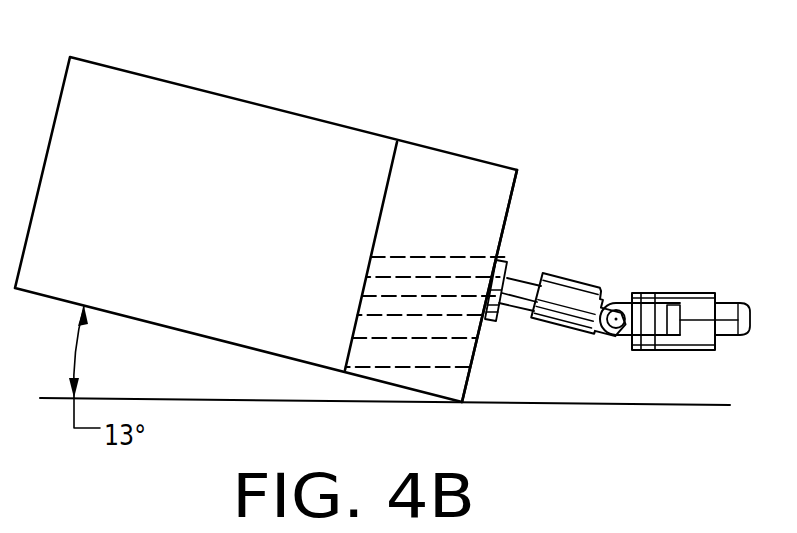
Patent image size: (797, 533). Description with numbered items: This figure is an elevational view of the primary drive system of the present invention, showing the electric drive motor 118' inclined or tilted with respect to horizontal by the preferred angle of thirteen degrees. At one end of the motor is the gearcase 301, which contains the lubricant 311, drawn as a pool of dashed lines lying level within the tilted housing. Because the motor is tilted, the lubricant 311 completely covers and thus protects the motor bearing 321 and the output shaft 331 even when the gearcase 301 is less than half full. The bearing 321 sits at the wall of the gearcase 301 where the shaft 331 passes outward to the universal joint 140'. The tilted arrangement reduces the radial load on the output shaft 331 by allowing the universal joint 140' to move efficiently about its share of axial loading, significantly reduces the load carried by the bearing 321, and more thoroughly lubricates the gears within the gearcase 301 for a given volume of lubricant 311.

The electric drive motor 118' is at (266, 218).
The gearcase 301 is at (444, 238).
The lubricant 311 is at (445, 359).
The motor bearing 321 is at (508, 258).
The shaft 331 is at (514, 308).
The universal joint 140' is at (680, 273).